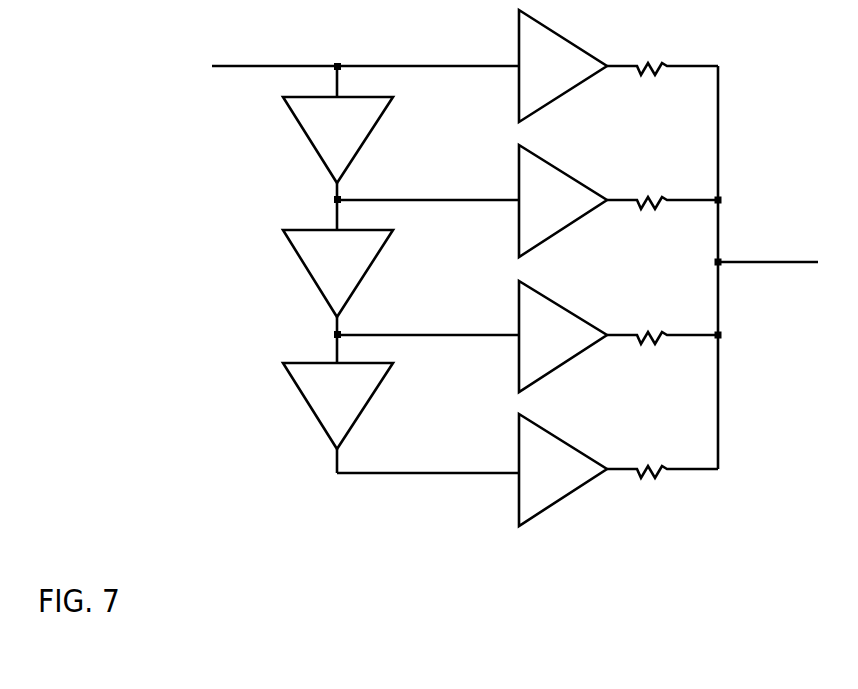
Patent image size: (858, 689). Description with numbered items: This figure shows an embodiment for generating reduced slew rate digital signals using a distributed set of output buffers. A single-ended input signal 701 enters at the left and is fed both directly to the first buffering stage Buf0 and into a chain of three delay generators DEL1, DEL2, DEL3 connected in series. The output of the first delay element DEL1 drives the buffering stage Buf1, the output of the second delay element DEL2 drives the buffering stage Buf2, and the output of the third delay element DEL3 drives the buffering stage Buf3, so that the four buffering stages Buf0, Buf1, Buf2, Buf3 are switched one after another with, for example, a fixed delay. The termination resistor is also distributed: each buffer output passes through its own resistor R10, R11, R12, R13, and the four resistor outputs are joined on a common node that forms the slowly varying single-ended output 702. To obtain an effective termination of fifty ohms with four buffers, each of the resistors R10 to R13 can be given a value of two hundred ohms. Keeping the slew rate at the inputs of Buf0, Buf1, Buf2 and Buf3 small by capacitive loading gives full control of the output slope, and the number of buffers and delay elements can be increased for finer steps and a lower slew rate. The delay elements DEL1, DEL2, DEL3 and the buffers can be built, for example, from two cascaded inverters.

The input signal 701 is at (237, 66).
The output terminal 702 is at (813, 262).
The first delay element DEL1 is at (338, 140).
The second delay element DEL2 is at (338, 273).
The third delay element DEL3 is at (338, 406).
The buffering stage Buf0 is at (563, 66).
The buffering stage Buf1 is at (563, 201).
The buffering stage Buf2 is at (563, 336).
The buffering stage Buf3 is at (563, 470).
The termination resistor R10 is at (662, 55).
The termination resistor R11 is at (662, 189).
The termination resistor R12 is at (662, 324).
The termination resistor R13 is at (662, 458).